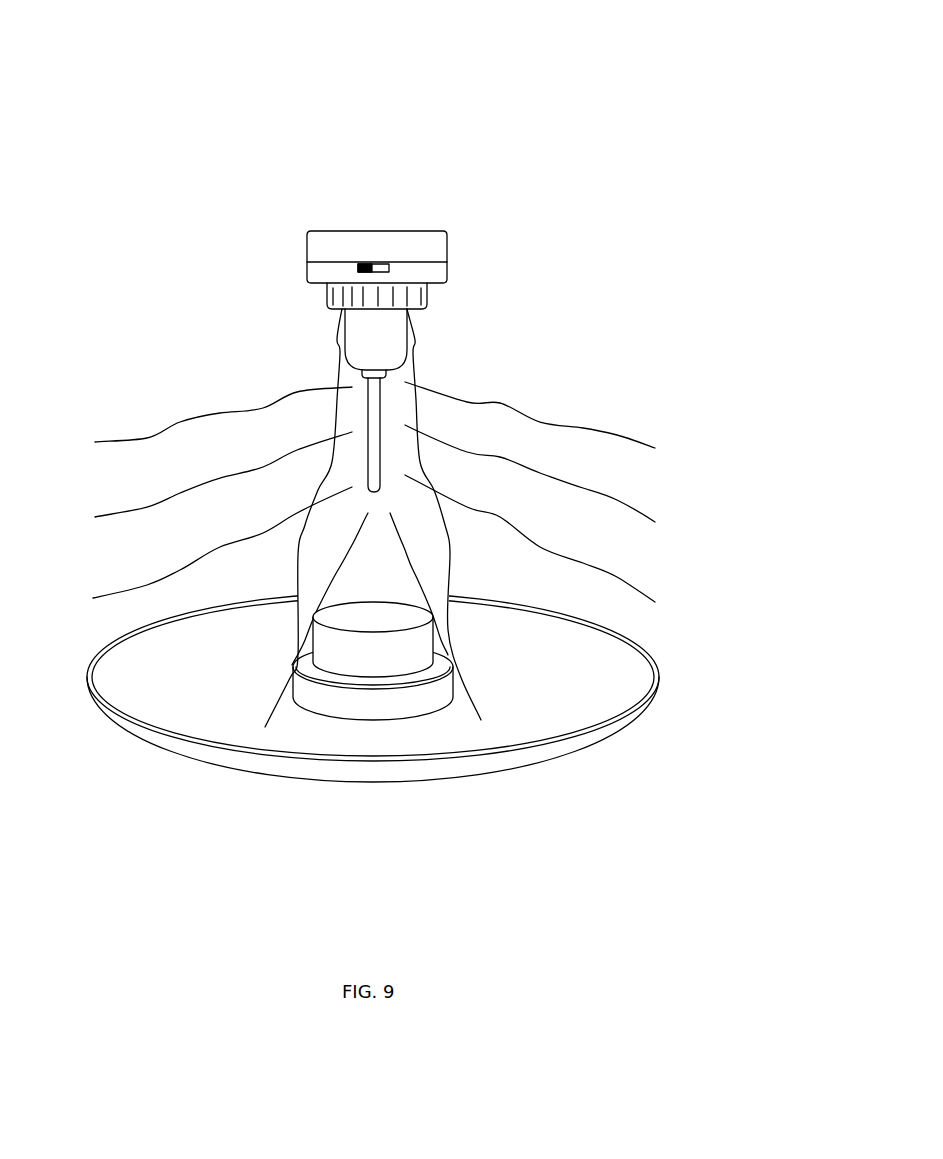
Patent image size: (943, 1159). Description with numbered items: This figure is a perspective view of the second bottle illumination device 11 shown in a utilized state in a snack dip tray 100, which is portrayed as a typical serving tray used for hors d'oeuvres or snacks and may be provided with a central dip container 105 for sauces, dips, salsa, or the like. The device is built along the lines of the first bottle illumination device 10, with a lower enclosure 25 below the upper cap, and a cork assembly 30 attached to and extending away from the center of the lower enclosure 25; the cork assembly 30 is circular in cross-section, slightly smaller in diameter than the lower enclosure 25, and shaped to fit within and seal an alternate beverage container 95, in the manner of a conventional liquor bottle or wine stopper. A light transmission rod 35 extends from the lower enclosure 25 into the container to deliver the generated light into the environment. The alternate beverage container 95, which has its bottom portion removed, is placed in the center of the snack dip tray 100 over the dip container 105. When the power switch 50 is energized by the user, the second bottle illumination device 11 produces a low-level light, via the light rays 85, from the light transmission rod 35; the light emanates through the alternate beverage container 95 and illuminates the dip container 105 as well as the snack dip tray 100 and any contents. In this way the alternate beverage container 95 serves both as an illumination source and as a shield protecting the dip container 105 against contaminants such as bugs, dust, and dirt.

The first bottle illumination device 10 is at (173, 145).
The second bottle illumination device 11 is at (108, 795).
The lower enclosure 25 is at (407, 295).
The cork assembly 30 is at (380, 350).
The light transmission rod 35 is at (367, 416).
The power switch 50 is at (365, 265).
The light rays 85 is at (145, 433).
The alternate beverage container 95 is at (450, 583).
The snack dip tray 100 is at (523, 747).
The dip container 105 is at (377, 648).